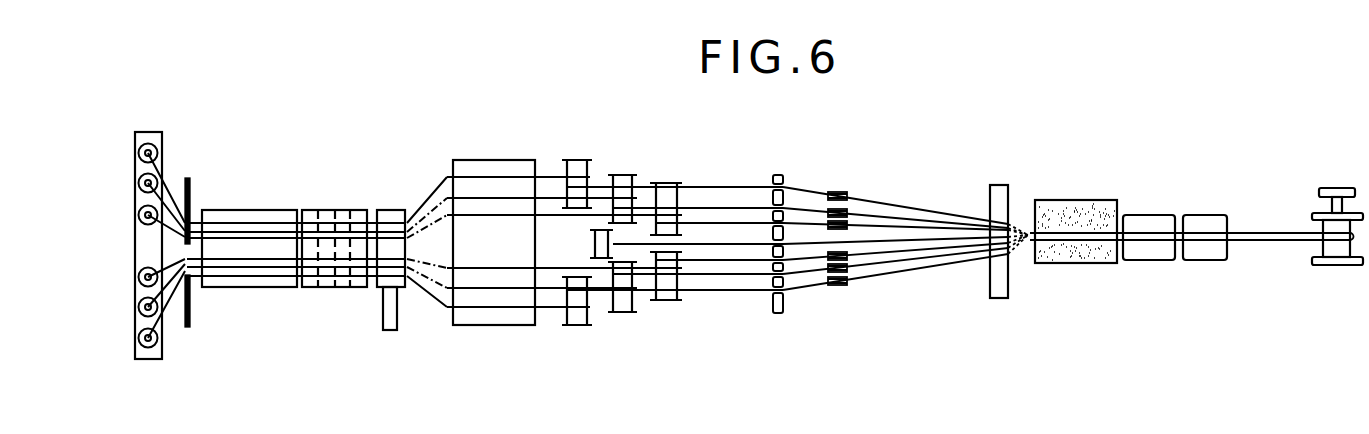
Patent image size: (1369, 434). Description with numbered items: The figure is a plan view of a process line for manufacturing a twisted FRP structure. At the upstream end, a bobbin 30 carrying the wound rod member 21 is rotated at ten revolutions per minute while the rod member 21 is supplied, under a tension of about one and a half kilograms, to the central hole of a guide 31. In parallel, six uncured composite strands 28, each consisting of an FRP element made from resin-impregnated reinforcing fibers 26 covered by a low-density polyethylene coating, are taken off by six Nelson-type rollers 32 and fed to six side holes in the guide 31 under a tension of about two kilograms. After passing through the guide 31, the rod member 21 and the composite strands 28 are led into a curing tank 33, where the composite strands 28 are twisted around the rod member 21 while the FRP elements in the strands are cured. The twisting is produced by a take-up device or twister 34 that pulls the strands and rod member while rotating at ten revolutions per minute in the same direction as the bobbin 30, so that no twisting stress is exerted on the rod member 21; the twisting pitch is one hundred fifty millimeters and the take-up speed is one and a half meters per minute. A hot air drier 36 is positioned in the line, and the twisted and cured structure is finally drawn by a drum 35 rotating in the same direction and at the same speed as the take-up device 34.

The rod member 21 is at (712, 245).
The reinforcing fibers 26 is at (163, 184).
The composite strand 28 is at (552, 173).
The bobbin 30 is at (598, 263).
The guide 31 is at (774, 176).
The Nelson-type rollers 32 is at (573, 323).
The curing tank 33 is at (1080, 258).
The take-up device or twister 34 is at (1208, 256).
The drum 35 is at (1338, 266).
The hot air drier 36 is at (1148, 256).